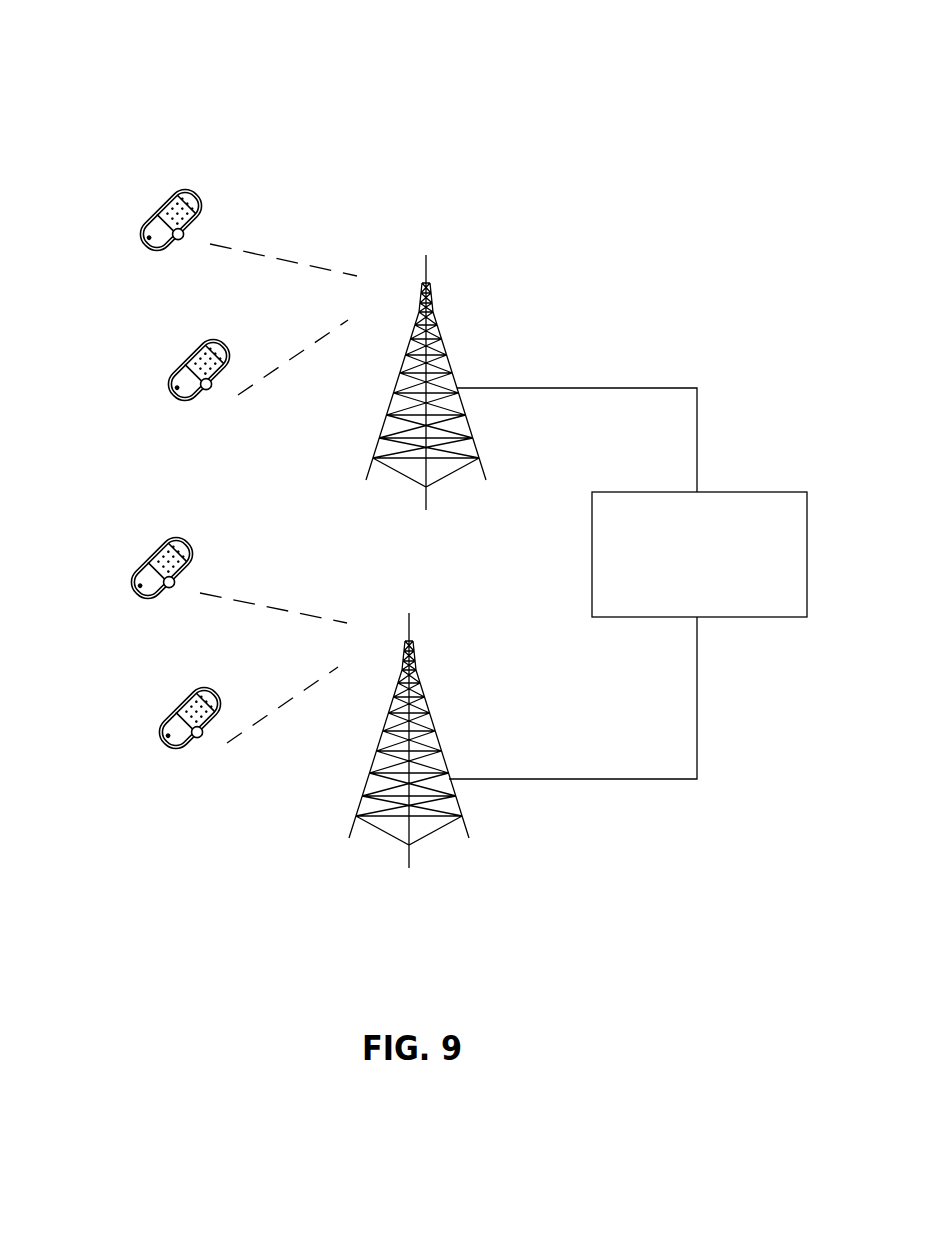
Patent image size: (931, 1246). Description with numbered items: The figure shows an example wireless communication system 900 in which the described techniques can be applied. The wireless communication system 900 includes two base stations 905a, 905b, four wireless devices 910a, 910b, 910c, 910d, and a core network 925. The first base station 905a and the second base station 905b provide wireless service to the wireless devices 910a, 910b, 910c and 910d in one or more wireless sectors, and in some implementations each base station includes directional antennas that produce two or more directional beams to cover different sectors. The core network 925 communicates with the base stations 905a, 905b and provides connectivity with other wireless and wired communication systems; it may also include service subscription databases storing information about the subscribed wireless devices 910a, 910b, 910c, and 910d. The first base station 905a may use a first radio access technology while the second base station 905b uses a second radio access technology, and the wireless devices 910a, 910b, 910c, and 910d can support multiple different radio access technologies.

The wireless communication system 900 is at (427, 50).
The base station 905a is at (440, 338).
The base station 905b is at (414, 641).
The wireless device 910a is at (170, 193).
The wireless device 910b is at (198, 343).
The wireless device 910c is at (160, 542).
The wireless device 910d is at (188, 692).
The core network 925 is at (600, 492).